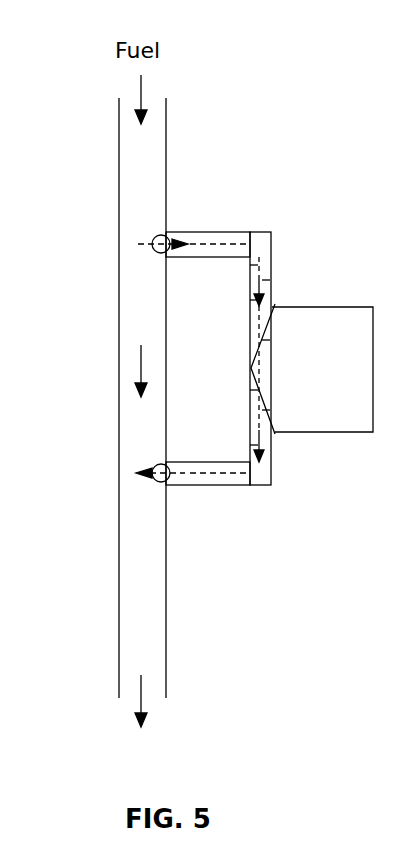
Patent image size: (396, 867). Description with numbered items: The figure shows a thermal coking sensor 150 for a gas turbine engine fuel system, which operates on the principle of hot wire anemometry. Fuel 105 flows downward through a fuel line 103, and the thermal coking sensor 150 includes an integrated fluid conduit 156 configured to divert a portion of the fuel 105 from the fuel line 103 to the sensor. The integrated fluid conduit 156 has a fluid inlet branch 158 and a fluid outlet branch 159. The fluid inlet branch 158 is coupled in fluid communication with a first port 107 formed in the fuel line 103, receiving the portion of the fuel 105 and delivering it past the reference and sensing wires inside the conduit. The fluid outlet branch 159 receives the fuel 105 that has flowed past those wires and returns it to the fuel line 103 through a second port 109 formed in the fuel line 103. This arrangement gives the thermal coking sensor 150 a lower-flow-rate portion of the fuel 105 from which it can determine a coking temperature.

The fuel line 103 is at (167, 153).
The fuel 105 is at (141, 99).
The first port 107 is at (165, 257).
The second port 109 is at (165, 462).
The thermal coking sensor 150 is at (325, 307).
The integrated fluid conduit 156 is at (284, 238).
The fluid inlet branch 158 is at (245, 238).
The fluid outlet branch 159 is at (215, 474).